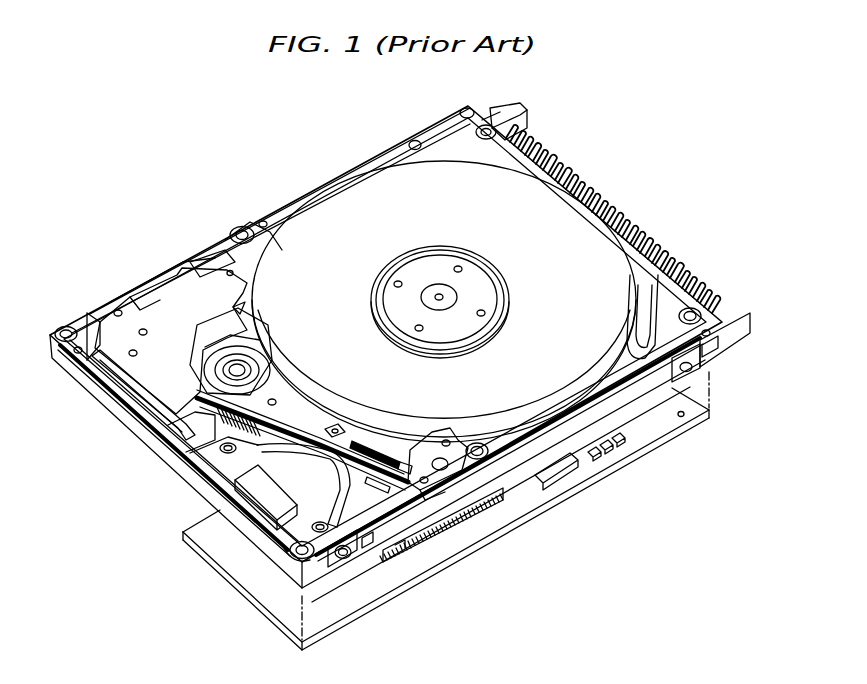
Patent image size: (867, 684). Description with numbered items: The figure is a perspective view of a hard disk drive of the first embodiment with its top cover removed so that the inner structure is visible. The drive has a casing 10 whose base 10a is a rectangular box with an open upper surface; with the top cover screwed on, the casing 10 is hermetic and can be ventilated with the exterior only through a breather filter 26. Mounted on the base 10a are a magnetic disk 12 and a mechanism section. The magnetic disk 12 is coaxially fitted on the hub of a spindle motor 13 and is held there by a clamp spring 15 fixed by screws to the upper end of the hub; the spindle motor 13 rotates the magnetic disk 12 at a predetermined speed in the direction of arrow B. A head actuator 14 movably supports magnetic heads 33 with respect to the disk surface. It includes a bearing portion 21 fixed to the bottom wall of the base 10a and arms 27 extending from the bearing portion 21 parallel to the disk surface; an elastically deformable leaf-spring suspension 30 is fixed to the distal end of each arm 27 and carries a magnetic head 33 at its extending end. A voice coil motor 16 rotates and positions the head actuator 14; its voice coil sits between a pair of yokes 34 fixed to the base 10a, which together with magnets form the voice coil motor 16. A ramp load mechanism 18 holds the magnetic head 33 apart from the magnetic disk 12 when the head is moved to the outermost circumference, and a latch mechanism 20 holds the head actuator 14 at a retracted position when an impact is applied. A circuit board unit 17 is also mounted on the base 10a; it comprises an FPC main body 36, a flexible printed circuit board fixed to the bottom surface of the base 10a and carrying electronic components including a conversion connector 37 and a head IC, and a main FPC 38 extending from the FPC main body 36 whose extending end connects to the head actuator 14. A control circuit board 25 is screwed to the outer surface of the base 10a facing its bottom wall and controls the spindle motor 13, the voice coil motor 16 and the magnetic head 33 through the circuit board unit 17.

The casing 10 is at (428, 119).
The base 10a is at (361, 548).
The magnetic disk 12 is at (372, 190).
The spindle motor 13 is at (508, 293).
The head actuator 14 is at (280, 395).
The clamp spring 15 is at (465, 251).
The voice coil motor 16 is at (148, 293).
The circuit board unit 17 is at (220, 462).
The ramp load mechanism 18 is at (455, 480).
The latch mechanism 20 is at (197, 262).
The bearing portion 21 is at (261, 353).
The control circuit board 25 is at (540, 503).
The breather filter 26 is at (642, 346).
The arm 27 is at (328, 426).
The suspension 30 is at (378, 438).
The magnetic head 33 is at (437, 472).
The yoke 34 is at (138, 405).
The FPC main body 36 is at (290, 527).
The conversion connector 37 is at (255, 485).
The main FPC 38 is at (306, 448).
The arrow B is at (336, 333).